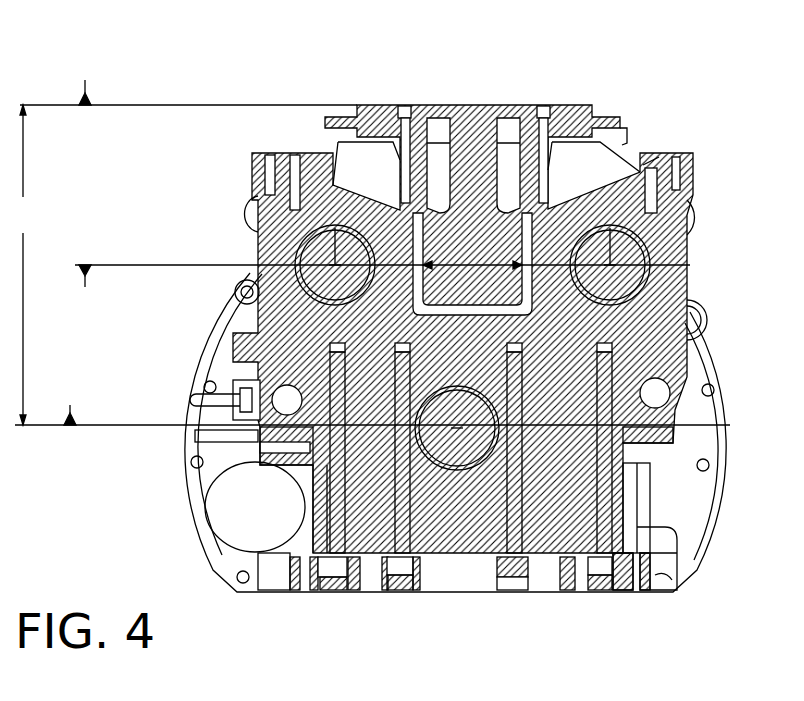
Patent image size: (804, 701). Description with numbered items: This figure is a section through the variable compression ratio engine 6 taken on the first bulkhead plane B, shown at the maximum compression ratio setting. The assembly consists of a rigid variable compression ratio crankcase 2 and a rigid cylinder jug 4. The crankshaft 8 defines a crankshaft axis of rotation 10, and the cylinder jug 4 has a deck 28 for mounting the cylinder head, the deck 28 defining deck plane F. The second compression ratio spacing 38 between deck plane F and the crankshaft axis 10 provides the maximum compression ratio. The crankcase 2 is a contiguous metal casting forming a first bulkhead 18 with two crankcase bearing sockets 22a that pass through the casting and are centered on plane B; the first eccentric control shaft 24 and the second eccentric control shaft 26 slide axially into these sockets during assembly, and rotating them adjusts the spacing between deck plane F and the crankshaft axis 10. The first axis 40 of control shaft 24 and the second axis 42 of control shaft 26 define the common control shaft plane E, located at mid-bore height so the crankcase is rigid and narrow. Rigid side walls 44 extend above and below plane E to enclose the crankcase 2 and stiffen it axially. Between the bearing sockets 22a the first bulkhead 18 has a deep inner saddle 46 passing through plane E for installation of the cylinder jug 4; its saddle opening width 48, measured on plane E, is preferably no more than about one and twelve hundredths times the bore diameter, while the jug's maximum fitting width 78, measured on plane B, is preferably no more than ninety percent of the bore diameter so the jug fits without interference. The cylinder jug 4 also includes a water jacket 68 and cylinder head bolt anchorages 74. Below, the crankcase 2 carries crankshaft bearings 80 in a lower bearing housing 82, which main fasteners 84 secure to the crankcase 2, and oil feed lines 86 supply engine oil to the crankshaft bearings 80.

The variable compression ratio crankcase 2 is at (687, 198).
The cylinder jug 4 is at (620, 117).
The variable compression ratio engine 6 is at (272, 72).
The crankshaft 8 is at (448, 465).
The crankshaft axis of rotation 10 is at (457, 432).
The first bulkhead 18 is at (245, 348).
The crankcase bearing socket 22a is at (298, 280).
The first eccentric control shaft 24 is at (335, 265).
The second eccentric control shaft 26 is at (700, 317).
The deck 28 is at (567, 103).
The second compression ratio spacing 38 is at (369, 242).
The first axis 40 is at (270, 223).
The second axis 42 is at (647, 270).
The rigid side walls 44 is at (677, 260).
The deep inner saddle 46 is at (663, 350).
The saddle opening width 48 is at (482, 272).
The water jacket 68 is at (433, 123).
The cylinder head bolt anchorages 74 is at (388, 160).
The maximum fitting width 78 is at (468, 272).
The crankshaft bearings 80 is at (315, 497).
The crankshaft lower bearing housing 82 is at (455, 432).
The main fasteners 84 is at (395, 573).
The oil feed lines 86 is at (293, 440).